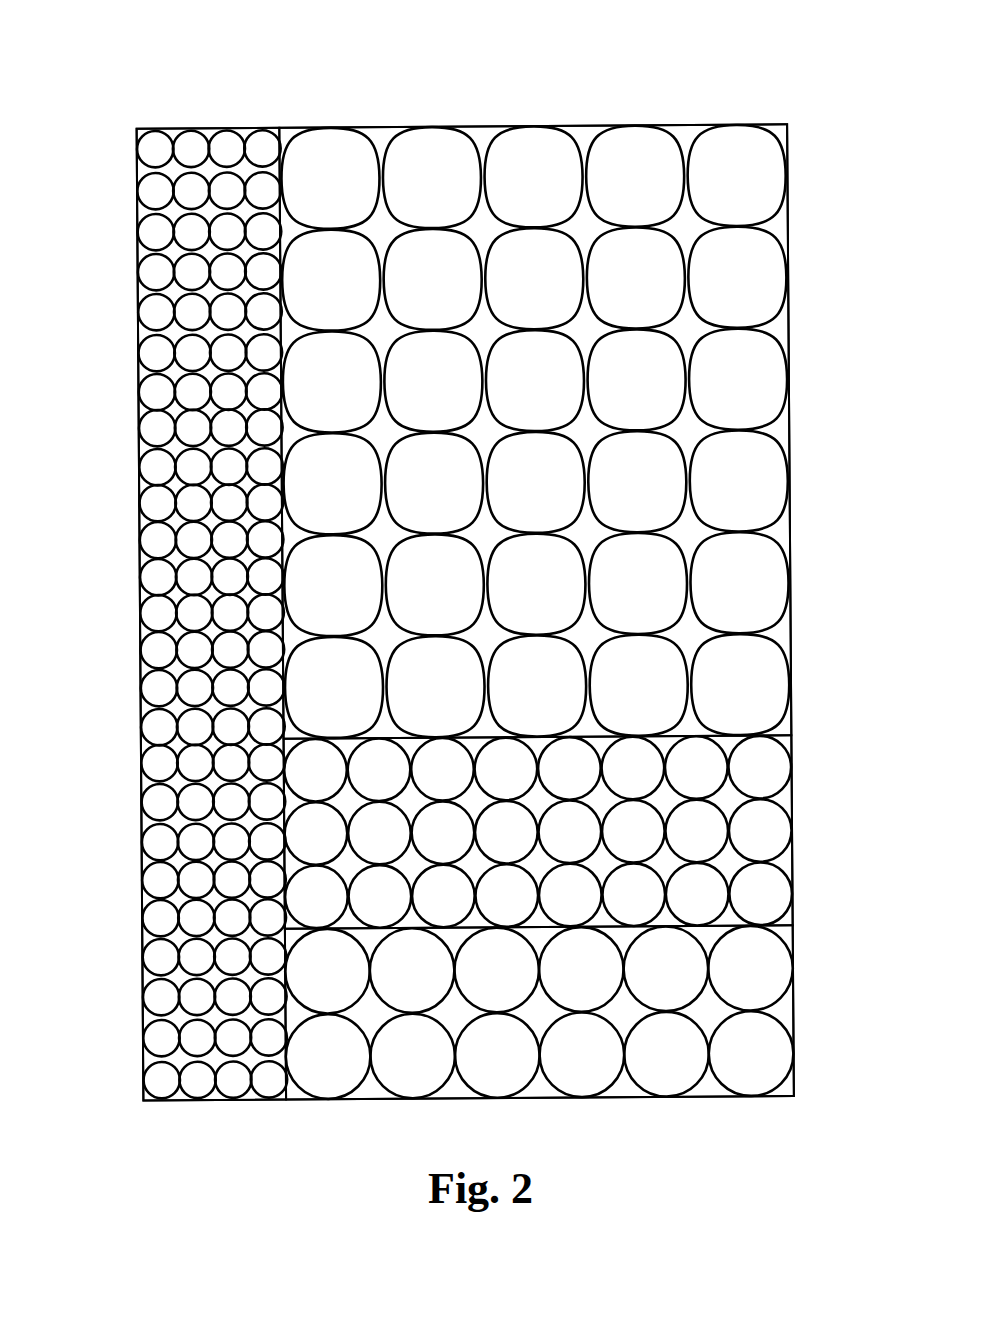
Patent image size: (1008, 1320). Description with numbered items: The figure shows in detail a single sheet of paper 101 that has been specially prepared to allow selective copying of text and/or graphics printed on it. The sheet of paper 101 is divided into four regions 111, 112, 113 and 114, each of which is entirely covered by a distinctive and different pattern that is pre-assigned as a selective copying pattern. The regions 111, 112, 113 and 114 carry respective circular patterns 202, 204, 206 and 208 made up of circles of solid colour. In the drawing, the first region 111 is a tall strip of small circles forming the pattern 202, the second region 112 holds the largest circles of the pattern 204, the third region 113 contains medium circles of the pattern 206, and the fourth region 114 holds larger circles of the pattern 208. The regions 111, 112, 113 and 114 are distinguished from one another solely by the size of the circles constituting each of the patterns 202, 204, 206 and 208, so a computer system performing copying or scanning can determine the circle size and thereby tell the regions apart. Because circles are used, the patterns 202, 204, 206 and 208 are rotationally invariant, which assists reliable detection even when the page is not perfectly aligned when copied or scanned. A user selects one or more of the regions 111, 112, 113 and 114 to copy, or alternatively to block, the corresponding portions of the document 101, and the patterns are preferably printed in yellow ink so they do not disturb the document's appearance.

The sheet of paper 101 is at (678, 127).
The region 111 is at (140, 170).
The region 112 is at (777, 232).
The region 113 is at (787, 800).
The region 114 is at (780, 1010).
The circular pattern 202 is at (148, 357).
The circular pattern 204 is at (767, 303).
The circular pattern 206 is at (765, 910).
The circular pattern 208 is at (767, 1078).